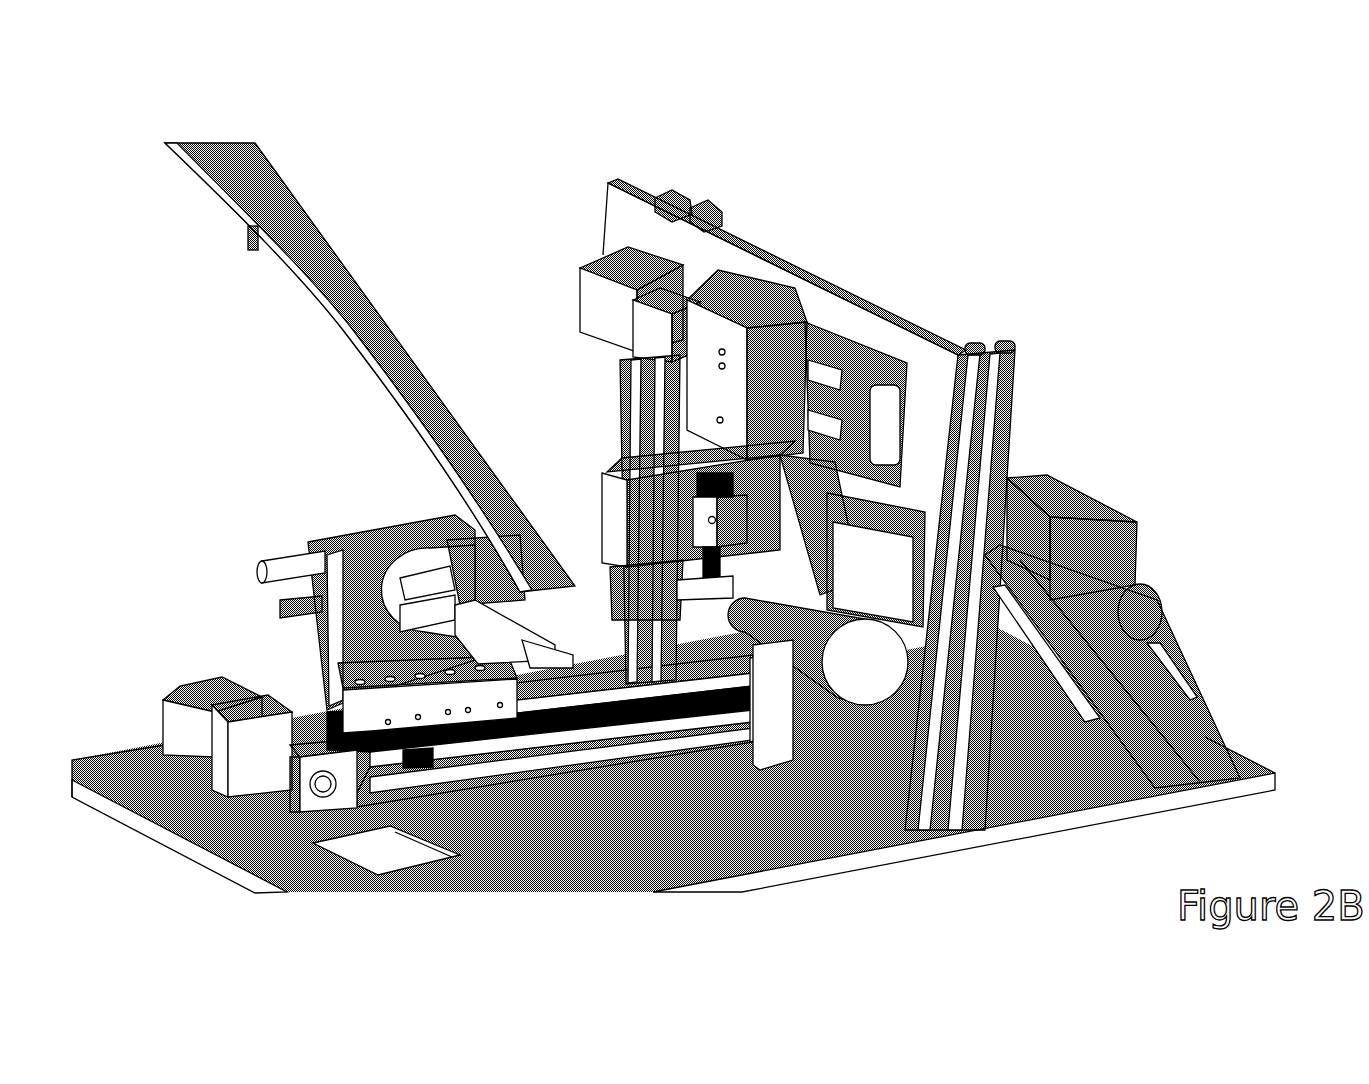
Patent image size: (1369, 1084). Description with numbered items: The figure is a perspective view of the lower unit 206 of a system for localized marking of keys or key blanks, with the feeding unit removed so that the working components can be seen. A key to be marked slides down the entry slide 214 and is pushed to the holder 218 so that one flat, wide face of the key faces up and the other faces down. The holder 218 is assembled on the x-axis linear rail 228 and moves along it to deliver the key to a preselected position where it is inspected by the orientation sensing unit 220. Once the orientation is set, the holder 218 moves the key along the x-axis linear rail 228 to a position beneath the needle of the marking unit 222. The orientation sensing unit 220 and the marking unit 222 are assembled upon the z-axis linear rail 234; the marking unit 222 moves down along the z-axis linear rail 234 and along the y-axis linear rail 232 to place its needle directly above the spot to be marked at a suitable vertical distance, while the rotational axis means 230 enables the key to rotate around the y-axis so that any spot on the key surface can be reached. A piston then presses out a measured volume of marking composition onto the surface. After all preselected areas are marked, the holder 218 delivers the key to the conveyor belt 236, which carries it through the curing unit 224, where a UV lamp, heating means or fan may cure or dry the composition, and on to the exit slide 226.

The lower unit 206 is at (337, 324).
The entry slide 214 is at (352, 356).
The holder 218 is at (460, 705).
The orientation sensing unit 220 is at (610, 663).
The marking unit 222 is at (722, 596).
The curing unit 224 is at (1050, 497).
The exit slide 226 is at (1178, 672).
The x-axis linear rail 228 is at (500, 783).
The rotational axis means 230 is at (420, 548).
The y-axis linear rail 232 is at (848, 325).
The z-axis linear rail 234 is at (738, 310).
The conveyor belt 236 is at (847, 633).